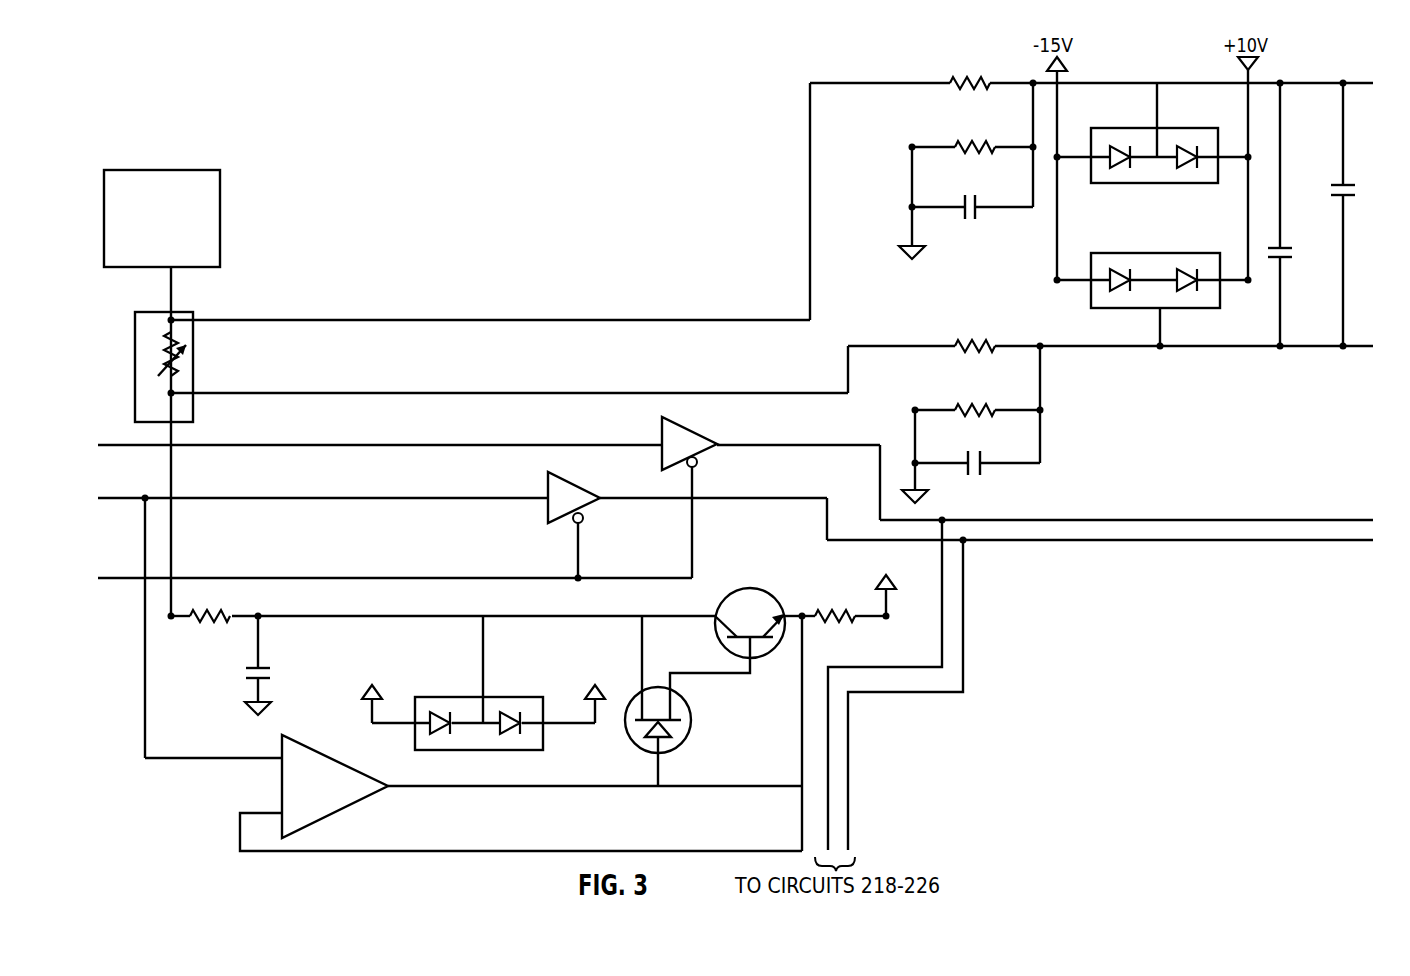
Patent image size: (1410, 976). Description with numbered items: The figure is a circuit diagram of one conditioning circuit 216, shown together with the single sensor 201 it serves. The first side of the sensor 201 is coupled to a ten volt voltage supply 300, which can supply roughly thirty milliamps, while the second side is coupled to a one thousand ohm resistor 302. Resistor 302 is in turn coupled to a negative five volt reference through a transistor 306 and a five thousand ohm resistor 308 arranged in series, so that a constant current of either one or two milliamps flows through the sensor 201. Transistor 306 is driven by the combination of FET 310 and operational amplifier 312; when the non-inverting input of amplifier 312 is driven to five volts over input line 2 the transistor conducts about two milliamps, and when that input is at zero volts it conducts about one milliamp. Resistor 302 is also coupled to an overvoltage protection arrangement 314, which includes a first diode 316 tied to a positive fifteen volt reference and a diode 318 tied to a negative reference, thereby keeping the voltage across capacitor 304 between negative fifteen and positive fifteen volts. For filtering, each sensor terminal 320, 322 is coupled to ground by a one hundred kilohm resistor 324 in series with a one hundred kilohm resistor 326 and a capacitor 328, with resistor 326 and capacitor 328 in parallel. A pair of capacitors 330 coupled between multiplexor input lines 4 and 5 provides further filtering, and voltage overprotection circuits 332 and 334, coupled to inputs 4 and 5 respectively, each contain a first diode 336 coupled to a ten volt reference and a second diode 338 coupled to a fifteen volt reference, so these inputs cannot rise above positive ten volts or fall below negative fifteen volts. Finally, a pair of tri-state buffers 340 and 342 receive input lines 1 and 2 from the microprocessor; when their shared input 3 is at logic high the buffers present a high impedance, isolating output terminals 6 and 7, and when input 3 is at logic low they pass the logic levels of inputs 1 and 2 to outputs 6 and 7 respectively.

The voltage supply 300 is at (220, 212).
The sensor 201 is at (196, 313).
The terminal 320 is at (173, 323).
The terminal 322 is at (173, 398).
The conditioning circuit 216 is at (740, 248).
The 100K ohm resistor 324 is at (952, 85).
The 100K ohm resistor 326 is at (952, 148).
The capacitor 328 is at (982, 212).
The voltage overprotection circuit 332 is at (1190, 122).
The voltage overprotection circuit 334 is at (1205, 320).
The first diode 336 is at (1187, 142).
The second diode 338 is at (1093, 122).
The capacitor 330 is at (1278, 245).
The tri-state buffer 340 is at (698, 432).
The tri-state buffer 342 is at (567, 520).
The resistor 302 is at (233, 623).
The capacitor 304 is at (263, 673).
The transistor 306 is at (728, 597).
The resistor 308 is at (820, 606).
The FET 310 is at (680, 742).
The operational amplifier 312 is at (362, 798).
The overvoltage protection arrangement 314 is at (583, 651).
The first diode 316 is at (512, 736).
The diode 318 is at (433, 736).
The input line 1 is at (127, 447).
The input line 2 is at (127, 500).
The input 3 is at (127, 578).
The multiplexor input line 4 is at (1354, 80).
The multiplexor input line 5 is at (1355, 343).
The output terminal 6 is at (1360, 517).
The output terminal 7 is at (1362, 545).